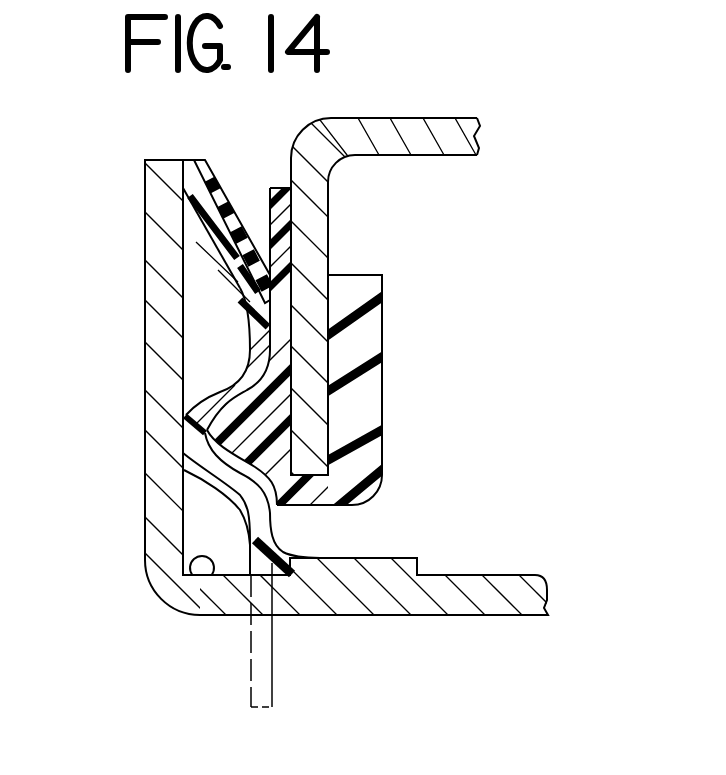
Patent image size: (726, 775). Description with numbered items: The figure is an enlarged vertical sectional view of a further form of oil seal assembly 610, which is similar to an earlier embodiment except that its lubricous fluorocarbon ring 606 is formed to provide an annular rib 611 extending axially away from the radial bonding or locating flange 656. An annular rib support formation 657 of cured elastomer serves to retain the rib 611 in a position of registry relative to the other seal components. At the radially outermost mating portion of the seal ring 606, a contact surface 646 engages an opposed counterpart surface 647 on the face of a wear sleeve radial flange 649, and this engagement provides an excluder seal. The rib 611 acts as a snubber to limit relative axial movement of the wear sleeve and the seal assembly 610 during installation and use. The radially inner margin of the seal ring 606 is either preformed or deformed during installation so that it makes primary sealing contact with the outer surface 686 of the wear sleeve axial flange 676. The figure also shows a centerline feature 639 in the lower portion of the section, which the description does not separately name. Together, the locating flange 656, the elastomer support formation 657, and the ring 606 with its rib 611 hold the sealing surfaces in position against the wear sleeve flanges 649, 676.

The lubricous fluorocarbon ring 606 is at (205, 347).
The oil seal assembly 610 is at (452, 285).
The annular rib 611 is at (185, 455).
The bolt centerline 639 is at (333, 580).
The contact surface 646 is at (183, 195).
The counterpart surface 647 is at (186, 267).
The wear sleeve radial flange 649 is at (160, 338).
The radial bonding or locating flange 656 is at (316, 398).
The annular rib support formation 657 is at (232, 446).
The wear sleeve axial flange 676 is at (478, 560).
The outer surface 686 is at (207, 560).